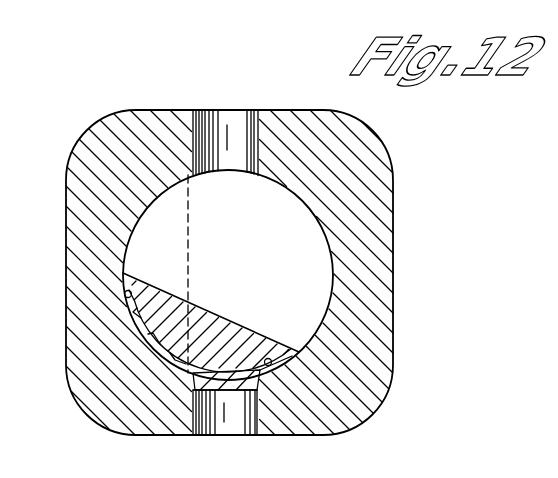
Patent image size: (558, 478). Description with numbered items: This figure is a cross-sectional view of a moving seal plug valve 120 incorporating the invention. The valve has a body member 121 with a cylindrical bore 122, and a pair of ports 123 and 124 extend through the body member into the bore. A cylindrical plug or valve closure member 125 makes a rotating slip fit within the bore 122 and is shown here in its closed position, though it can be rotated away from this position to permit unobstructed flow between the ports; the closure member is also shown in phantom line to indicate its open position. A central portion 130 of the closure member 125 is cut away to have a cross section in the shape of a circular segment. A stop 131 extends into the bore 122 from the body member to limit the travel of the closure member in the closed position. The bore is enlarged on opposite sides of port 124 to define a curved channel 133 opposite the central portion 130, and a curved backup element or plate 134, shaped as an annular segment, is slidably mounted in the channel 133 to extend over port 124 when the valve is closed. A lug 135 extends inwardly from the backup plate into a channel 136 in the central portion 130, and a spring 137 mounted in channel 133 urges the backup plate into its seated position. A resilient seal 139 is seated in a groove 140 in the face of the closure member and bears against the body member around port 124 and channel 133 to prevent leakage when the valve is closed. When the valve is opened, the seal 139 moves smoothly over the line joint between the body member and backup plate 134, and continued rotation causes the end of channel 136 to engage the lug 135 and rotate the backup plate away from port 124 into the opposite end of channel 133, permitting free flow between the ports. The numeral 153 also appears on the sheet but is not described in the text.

The moving seal plug valve 120 is at (72, 137).
The body member 121 is at (67, 308).
The cylindrical bore 122 is at (323, 230).
The port 123 is at (228, 122).
The port 124 is at (240, 435).
The cylindrical plug or valve closure member 125 is at (127, 228).
The central portion 130 is at (188, 200).
The stop 131 is at (300, 348).
The curved channel 133 is at (195, 387).
The curved backup element or plate 134 is at (192, 392).
The lug 135 is at (217, 360).
The channel 136 is at (256, 326).
The spring 137 is at (187, 378).
The resilient seal 139 is at (123, 293).
The groove 140 is at (200, 214).
The stem 153 is at (123, 472).